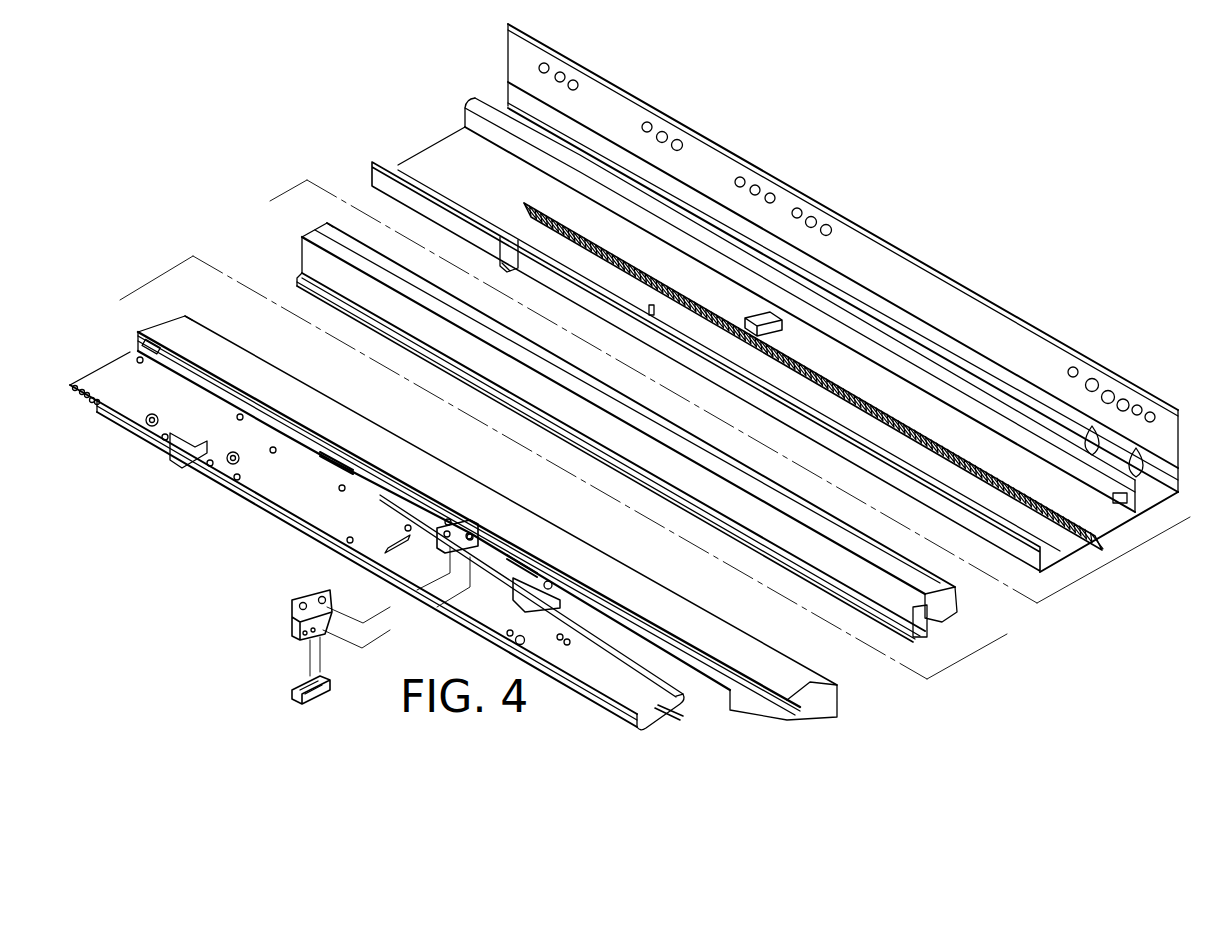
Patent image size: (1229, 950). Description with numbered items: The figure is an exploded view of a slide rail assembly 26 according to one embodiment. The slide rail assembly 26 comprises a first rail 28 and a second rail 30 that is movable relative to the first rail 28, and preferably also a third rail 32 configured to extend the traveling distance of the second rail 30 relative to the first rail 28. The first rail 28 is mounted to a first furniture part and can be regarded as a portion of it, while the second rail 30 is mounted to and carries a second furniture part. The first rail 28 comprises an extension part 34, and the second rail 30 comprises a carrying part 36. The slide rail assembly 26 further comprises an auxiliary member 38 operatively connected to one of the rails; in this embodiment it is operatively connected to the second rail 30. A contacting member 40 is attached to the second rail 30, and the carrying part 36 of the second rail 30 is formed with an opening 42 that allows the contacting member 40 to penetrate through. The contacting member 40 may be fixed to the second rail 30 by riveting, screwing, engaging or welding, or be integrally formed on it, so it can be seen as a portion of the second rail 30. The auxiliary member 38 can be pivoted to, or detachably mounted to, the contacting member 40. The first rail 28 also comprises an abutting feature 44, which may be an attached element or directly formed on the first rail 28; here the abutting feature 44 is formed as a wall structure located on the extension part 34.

The slide rail assembly 26 is at (224, 126).
The first rail 28 is at (692, 125).
The second rail 30 is at (808, 714).
The third rail 32 is at (936, 583).
The extension part 34 is at (910, 400).
The carrying part 36 is at (470, 598).
The auxiliary member 38 is at (312, 701).
The contacting member 40 is at (308, 600).
The opening 42 is at (462, 530).
The abutting feature 44 is at (778, 310).